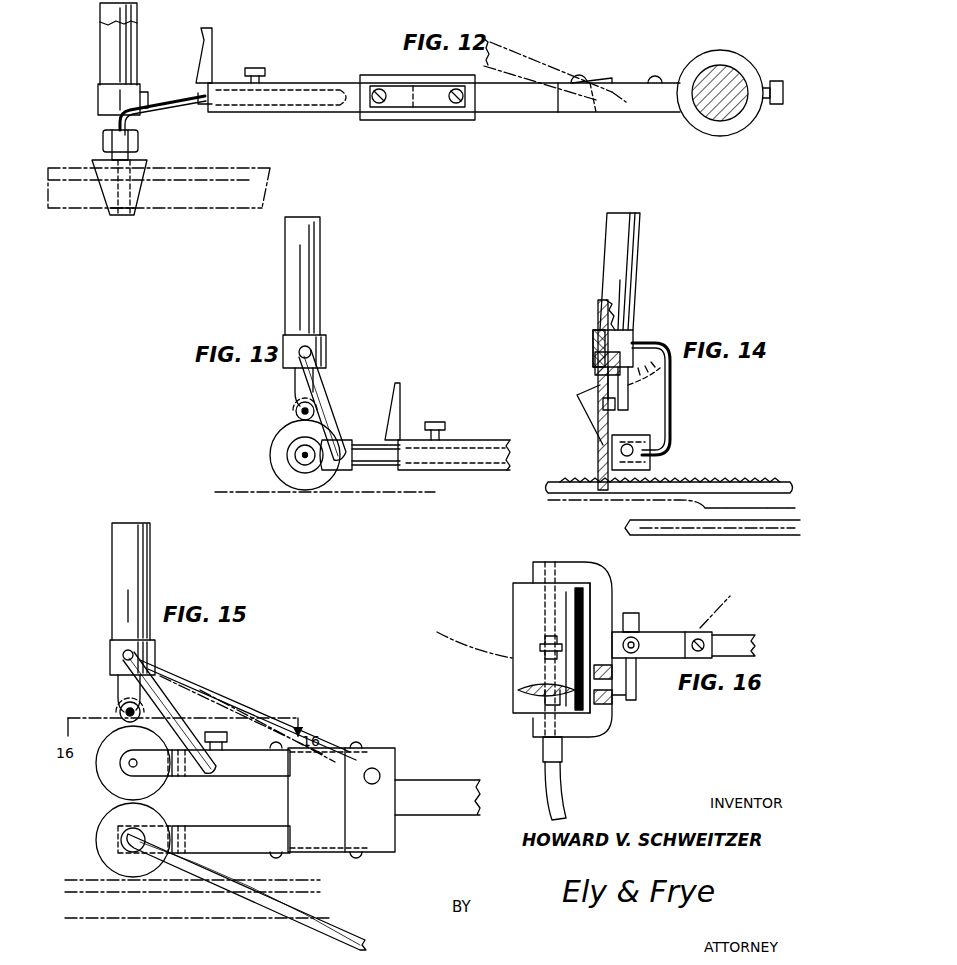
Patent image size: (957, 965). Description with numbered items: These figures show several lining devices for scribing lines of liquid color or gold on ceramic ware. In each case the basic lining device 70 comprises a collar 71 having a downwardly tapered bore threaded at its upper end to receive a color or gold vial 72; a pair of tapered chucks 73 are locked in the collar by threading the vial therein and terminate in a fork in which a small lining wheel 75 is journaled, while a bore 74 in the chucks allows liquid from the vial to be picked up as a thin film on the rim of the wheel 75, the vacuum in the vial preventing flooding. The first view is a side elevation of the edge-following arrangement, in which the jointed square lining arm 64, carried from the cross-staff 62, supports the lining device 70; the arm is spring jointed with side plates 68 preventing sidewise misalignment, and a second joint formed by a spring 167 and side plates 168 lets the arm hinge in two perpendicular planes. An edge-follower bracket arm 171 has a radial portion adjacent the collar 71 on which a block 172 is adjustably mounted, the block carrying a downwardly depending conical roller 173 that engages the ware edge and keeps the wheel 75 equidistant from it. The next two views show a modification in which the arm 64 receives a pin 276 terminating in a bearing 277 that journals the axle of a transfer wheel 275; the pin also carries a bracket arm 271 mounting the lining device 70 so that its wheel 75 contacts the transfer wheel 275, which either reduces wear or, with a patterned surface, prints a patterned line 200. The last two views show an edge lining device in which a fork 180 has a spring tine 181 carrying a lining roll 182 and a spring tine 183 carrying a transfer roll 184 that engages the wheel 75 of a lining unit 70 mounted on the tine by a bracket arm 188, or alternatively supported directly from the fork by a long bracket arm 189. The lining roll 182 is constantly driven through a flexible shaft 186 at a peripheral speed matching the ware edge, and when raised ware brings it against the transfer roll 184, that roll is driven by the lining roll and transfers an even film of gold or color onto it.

In FIG. 12, the cross-staff 62 is at (737, 80).
In FIG. 12, the lining arm 64 is at (522, 100).
In FIG. 13, the lining arm 64 is at (490, 441).
In FIG. 12, the side plates 68 is at (586, 104).
In FIG. 12, the lining device 70 is at (140, 34).
In FIG. 13, the lining device 70 is at (328, 319).
In FIG. 14, the lining device 70 is at (647, 224).
In FIG. 15, the lining device 70 is at (153, 578).
In FIG. 12, the collar 71 is at (98, 96).
In FIG. 13, the collar 71 is at (328, 352).
In FIG. 14, the collar 71 is at (593, 336).
In FIG. 15, the collar 71 is at (110, 653).
In FIG. 12, the vial 72 is at (100, 47).
In FIG. 13, the vial 72 is at (288, 292).
In FIG. 14, the vial 72 is at (606, 278).
In FIG. 15, the vial 72 is at (113, 597).
In FIG. 13, the tapered chucks 73 is at (296, 382).
In FIG. 14, the tapered chucks 73 is at (606, 372).
In FIG. 15, the tapered chucks 73 is at (119, 688).
In FIG. 16, the tapered chucks 73 is at (538, 658).
In FIG. 14, the bore 74 is at (596, 360).
In FIG. 13, the lining wheel 75 is at (295, 410).
In FIG. 14, the lining wheel 75 is at (603, 409).
In FIG. 15, the lining wheel 75 is at (120, 711).
In FIG. 16, the lining wheel 75 is at (538, 646).
In FIG. 12, the spring 167 is at (395, 101).
In FIG. 12, the side plates 168 is at (371, 75).
In FIG. 12, the edge-follower bracket arm 171 is at (156, 98).
In FIG. 12, the block 172 is at (138, 141).
In FIG. 12, the conical roller 173 is at (105, 200).
In FIG. 15, the fork 180 is at (428, 786).
In FIG. 16, the fork 180 is at (474, 645).
In FIG. 15, the spring tine 181 is at (272, 830).
In FIG. 16, the spring tine 181 is at (604, 726).
In FIG. 15, the lining roll 182 is at (108, 835).
In FIG. 16, the lining roll 182 is at (520, 704).
In FIG. 15, the spring tine 183 is at (250, 777).
In FIG. 16, the spring tine 183 is at (657, 632).
In FIG. 15, the transfer roll 184 is at (110, 779).
In FIG. 16, the transfer roll 184 is at (520, 596).
In FIG. 15, the flexible shaft 186 is at (295, 928).
In FIG. 16, the flexible shaft 186 is at (568, 802).
In FIG. 15, the bracket arm 188 is at (178, 698).
In FIG. 16, the bracket arm 188 is at (640, 702).
In FIG. 15, the long bracket arm 189 is at (240, 700).
In FIG. 14, the patterned line 200 is at (742, 484).
In FIG. 13, the bracket arm 271 is at (326, 396).
In FIG. 14, the bracket arm 271 is at (672, 430).
In FIG. 13, the transfer wheel 275 is at (283, 456).
In FIG. 14, the transfer wheel 275 is at (598, 461).
In FIG. 13, the pin 276 is at (366, 444).
In FIG. 13, the bearing 277 is at (300, 445).
In FIG. 14, the bearing 277 is at (650, 466).